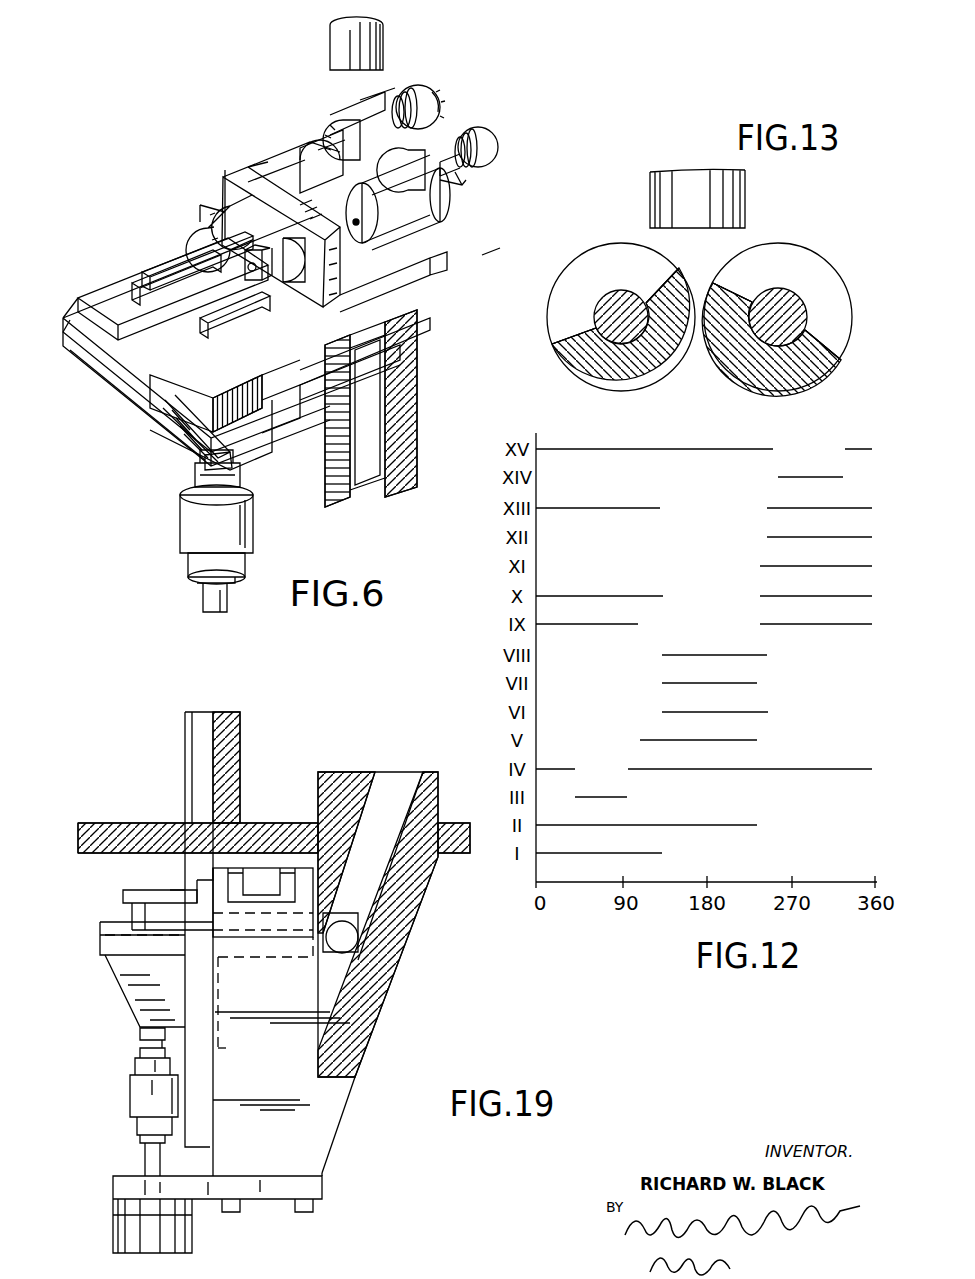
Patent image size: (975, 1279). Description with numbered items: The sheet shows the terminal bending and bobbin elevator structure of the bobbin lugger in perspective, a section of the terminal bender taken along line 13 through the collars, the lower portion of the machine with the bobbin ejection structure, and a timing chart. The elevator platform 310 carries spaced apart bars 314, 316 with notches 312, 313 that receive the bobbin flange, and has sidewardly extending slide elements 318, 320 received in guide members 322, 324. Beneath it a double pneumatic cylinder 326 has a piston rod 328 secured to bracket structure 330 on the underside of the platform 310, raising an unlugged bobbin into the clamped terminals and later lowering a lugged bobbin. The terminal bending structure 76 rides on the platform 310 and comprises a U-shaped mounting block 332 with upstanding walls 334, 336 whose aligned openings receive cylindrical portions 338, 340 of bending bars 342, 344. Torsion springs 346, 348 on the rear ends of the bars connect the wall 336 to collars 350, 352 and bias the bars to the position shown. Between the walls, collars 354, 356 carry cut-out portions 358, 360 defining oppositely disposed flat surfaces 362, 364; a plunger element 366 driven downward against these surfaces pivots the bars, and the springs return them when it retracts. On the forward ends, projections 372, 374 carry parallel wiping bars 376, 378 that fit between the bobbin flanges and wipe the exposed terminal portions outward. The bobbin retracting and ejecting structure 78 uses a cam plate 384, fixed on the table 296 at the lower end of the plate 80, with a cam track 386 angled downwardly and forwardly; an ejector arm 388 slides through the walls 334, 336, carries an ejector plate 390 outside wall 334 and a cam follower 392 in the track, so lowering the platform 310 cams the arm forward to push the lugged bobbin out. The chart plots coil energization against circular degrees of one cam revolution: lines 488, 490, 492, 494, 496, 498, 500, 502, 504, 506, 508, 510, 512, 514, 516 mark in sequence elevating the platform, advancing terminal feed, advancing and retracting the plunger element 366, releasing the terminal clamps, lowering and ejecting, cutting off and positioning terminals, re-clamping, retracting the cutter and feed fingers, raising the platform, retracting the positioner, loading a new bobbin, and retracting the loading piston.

In FIG. 6, the section line 13 is at (318, 150).
In FIG. 6, the terminal bending structure 76 is at (276, 115).
In FIG. 19, the terminal bending structure 76 is at (172, 881).
In FIG. 19, the bobbin retracting and ejecting structure 78 is at (407, 980).
In FIG. 19, the plate 80 is at (237, 745).
In FIG. 19, the table 296 is at (127, 823).
In FIG. 6, the elevator platform 310 is at (82, 345).
In FIG. 19, the elevator platform 310 is at (102, 945).
In FIG. 6, the notch 312 is at (113, 353).
In FIG. 6, the notch 313 is at (167, 387).
In FIG. 6, the bar 314 is at (105, 287).
In FIG. 6, the bar 316 is at (247, 327).
In FIG. 6, the slide element 318 is at (70, 302).
In FIG. 6, the slide element 320 is at (250, 422).
In FIG. 6, the guide member 322 is at (205, 205).
In FIG. 6, the guide member 324 is at (383, 290).
In FIG. 19, the pneumatic cylinder 326 is at (193, 1230).
In FIG. 6, the piston rod 328 is at (202, 590).
In FIG. 19, the piston rod 328 is at (147, 1157).
In FIG. 6, the bracket structure 330 is at (167, 420).
In FIG. 19, the bracket structure 330 is at (123, 982).
In FIG. 6, the U-shaped mounting block 332 is at (360, 232).
In FIG. 19, the U-shaped mounting block 332 is at (268, 935).
In FIG. 6, the upstanding wall 334 is at (237, 178).
In FIG. 19, the upstanding wall 334 is at (217, 872).
In FIG. 6, the upstanding wall 336 is at (377, 108).
In FIG. 19, the upstanding wall 336 is at (305, 868).
In FIG. 6, the cylindrical portion 338 is at (318, 145).
In FIG. 13, the cylindrical portion 338 is at (627, 283).
In FIG. 6, the cylindrical portion 340 is at (393, 273).
In FIG. 13, the cylindrical portion 340 is at (807, 317).
In FIG. 6, the bending bar 342 is at (180, 246).
In FIG. 6, the bending bar 344 is at (255, 388).
In FIG. 6, the torsion spring 346 is at (450, 78).
In FIG. 6, the torsion spring 348 is at (470, 178).
In FIG. 6, the collar 350 is at (443, 110).
In FIG. 6, the collar 352 is at (498, 147).
In FIG. 6, the collar 354 is at (335, 128).
In FIG. 13, the collar 354 is at (612, 385).
In FIG. 6, the collar 356 is at (453, 210).
In FIG. 13, the collar 356 is at (798, 393).
In FIG. 6, the cut-out portion 358 is at (330, 128).
In FIG. 13, the cut-out portion 358 is at (585, 258).
In FIG. 6, the cut-out portion 360 is at (445, 195).
In FIG. 13, the cut-out portion 360 is at (828, 280).
In FIG. 13, the flat surface 362 is at (677, 283).
In FIG. 13, the flat surface 364 is at (728, 285).
In FIG. 6, the plunger element 366 is at (383, 40).
In FIG. 13, the plunger element 366 is at (745, 194).
In FIG. 6, the projection 372 is at (200, 235).
In FIG. 6, the projection 374 is at (410, 387).
In FIG. 6, the wiping bar 376 is at (150, 265).
In FIG. 6, the wiping bar 378 is at (140, 383).
In FIG. 19, the cam plate 384 is at (368, 1023).
In FIG. 19, the cam track 386 is at (400, 771).
In FIG. 19, the ejector arm 388 is at (213, 1007).
In FIG. 19, the ejector plate 390 is at (128, 908).
In FIG. 19, the cam follower 392 is at (340, 945).
In FIG. 12, the line 488 is at (578, 852).
In FIG. 12, the line 490 is at (690, 824).
In FIG. 12, the line 492 is at (590, 796).
In FIG. 12, the line 494 is at (707, 768).
In FIG. 12, the line 496 is at (703, 739).
In FIG. 12, the line 498 is at (703, 711).
In FIG. 12, the line 500 is at (706, 683).
In FIG. 12, the line 502 is at (685, 654).
In FIG. 12, the line 504 is at (785, 623).
In FIG. 12, the line 506 is at (790, 594).
In FIG. 12, the line 508 is at (795, 565).
In FIG. 12, the line 510 is at (792, 537).
In FIG. 12, the line 512 is at (800, 507).
In FIG. 12, the line 514 is at (782, 477).
In FIG. 12, the line 516 is at (686, 449).